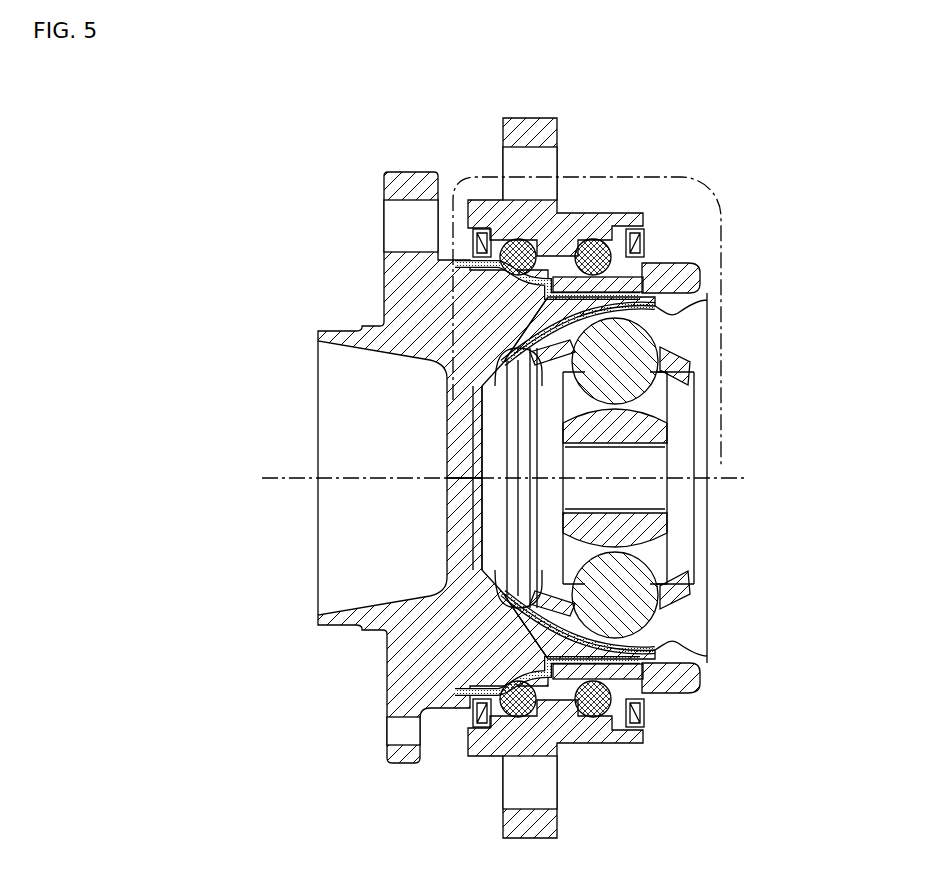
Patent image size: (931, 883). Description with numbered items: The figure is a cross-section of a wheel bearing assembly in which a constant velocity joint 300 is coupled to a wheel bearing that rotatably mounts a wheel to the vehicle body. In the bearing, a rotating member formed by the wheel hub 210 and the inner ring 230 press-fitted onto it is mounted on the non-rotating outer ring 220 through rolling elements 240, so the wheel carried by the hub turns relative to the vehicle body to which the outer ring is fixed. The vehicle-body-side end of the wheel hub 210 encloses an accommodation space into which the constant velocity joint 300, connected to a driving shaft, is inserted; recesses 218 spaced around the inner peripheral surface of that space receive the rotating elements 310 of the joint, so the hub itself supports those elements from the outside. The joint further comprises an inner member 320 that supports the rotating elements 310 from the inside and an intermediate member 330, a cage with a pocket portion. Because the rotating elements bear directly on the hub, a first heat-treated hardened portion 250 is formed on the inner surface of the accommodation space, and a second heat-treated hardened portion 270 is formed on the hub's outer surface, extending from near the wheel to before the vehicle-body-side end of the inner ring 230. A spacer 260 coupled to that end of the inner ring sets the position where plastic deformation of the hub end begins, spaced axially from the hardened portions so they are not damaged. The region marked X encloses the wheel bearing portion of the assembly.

The wheel hub 210 is at (340, 333).
The recesses 218 is at (516, 535).
The outer ring 220 is at (493, 205).
The inner ring 230 is at (648, 236).
The rolling elements 240 is at (598, 244).
The first heat-treated hardened portion 250 is at (668, 318).
The spacer 260 is at (665, 263).
The second heat-treated hardened portion 270 is at (500, 367).
The constant velocity joint 300 is at (695, 518).
The rotating elements 310 is at (633, 340).
The inner member 320 is at (650, 432).
The intermediate member 330 is at (690, 370).
The wheel bearing assembly region X is at (664, 177).